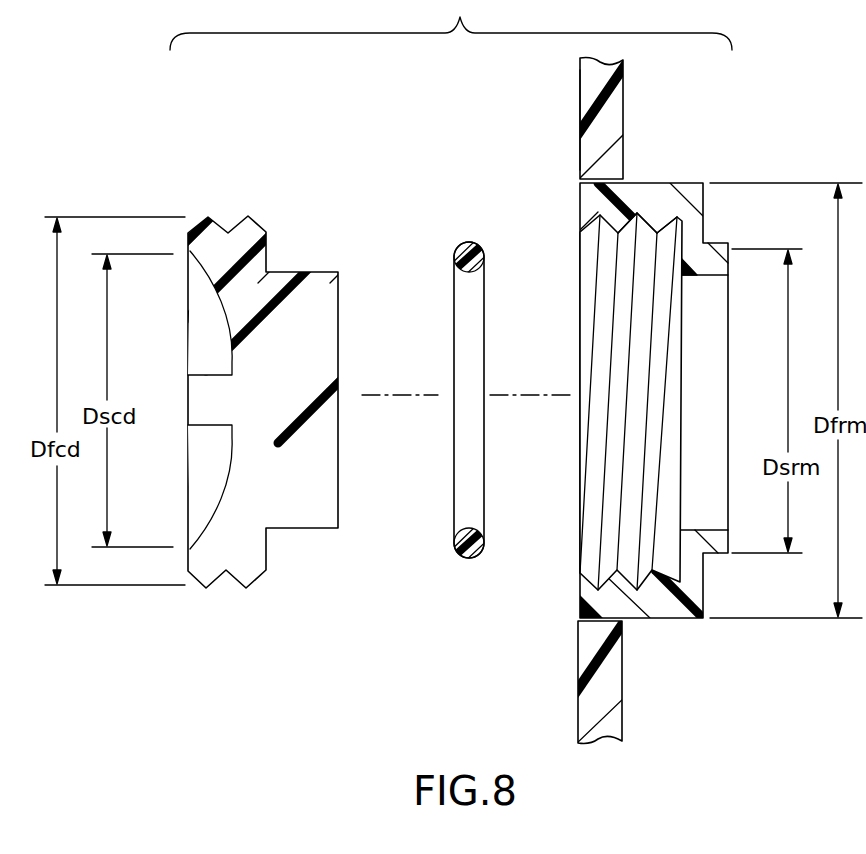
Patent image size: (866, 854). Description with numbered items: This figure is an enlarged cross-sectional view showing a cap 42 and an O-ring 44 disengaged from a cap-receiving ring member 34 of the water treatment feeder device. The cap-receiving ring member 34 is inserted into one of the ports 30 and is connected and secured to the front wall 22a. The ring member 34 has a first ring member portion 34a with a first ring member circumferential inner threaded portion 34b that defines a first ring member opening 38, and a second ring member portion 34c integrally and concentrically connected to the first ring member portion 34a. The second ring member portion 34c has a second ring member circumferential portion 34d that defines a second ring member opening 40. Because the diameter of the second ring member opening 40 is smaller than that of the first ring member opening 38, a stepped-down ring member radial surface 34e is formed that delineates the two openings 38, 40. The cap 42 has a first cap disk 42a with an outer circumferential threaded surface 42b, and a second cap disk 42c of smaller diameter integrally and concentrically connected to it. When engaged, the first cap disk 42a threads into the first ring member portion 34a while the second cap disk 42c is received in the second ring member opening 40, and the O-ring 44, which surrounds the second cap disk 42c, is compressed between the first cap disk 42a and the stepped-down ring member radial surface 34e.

The front wall 22a is at (580, 120).
The port 30 is at (623, 180).
The cap-receiving ring member 34 is at (653, 369).
The first ring member portion 34a is at (580, 212).
The first ring member circumferential inner threaded portion 34b is at (652, 240).
The second ring member portion 34c is at (712, 245).
The second ring member circumferential portion 34d is at (710, 277).
The stepped-down ring member radial surface 34e is at (658, 272).
The first ring member opening 38 is at (637, 420).
The second ring member opening 40 is at (716, 420).
The cap 42 is at (500, 365).
The first cap disk 42a is at (188, 410).
The outer circumferential threaded surface 42b is at (200, 223).
The second cap disk 42c is at (298, 530).
The O-ring 44 is at (458, 246).